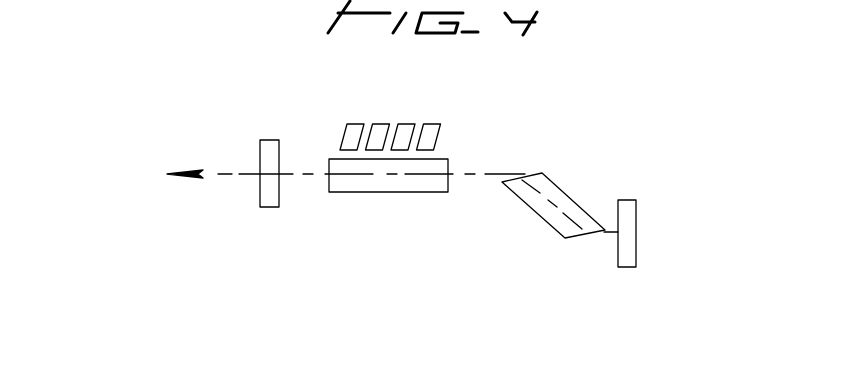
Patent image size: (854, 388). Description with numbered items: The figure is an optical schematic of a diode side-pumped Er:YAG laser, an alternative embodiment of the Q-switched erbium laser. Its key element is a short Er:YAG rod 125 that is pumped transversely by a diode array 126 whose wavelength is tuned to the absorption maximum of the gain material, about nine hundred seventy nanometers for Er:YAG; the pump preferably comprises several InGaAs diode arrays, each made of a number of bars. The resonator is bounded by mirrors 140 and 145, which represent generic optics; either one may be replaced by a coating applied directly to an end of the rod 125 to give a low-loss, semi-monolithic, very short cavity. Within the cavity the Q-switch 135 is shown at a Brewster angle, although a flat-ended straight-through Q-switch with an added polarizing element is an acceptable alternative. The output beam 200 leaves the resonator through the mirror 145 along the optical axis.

The output beam 200 is at (239, 174).
The mirror 145 is at (272, 205).
The Er:YAG rod 125 is at (392, 192).
The diode array 126 is at (433, 124).
The Q-switch 135 is at (542, 213).
The mirror 140 is at (622, 262).